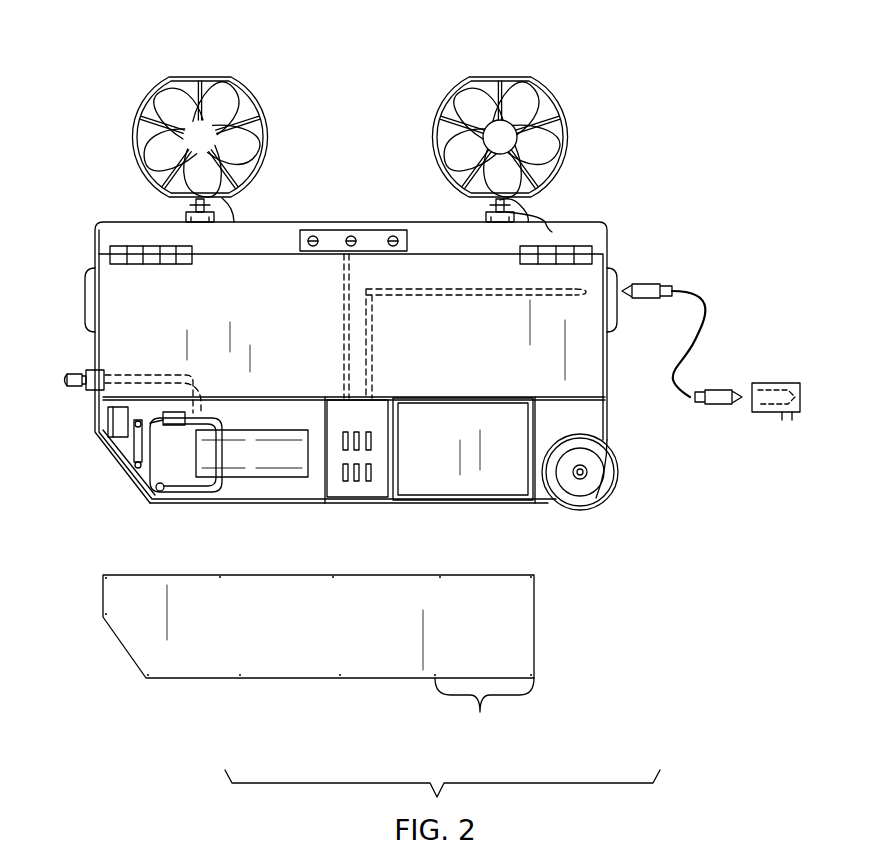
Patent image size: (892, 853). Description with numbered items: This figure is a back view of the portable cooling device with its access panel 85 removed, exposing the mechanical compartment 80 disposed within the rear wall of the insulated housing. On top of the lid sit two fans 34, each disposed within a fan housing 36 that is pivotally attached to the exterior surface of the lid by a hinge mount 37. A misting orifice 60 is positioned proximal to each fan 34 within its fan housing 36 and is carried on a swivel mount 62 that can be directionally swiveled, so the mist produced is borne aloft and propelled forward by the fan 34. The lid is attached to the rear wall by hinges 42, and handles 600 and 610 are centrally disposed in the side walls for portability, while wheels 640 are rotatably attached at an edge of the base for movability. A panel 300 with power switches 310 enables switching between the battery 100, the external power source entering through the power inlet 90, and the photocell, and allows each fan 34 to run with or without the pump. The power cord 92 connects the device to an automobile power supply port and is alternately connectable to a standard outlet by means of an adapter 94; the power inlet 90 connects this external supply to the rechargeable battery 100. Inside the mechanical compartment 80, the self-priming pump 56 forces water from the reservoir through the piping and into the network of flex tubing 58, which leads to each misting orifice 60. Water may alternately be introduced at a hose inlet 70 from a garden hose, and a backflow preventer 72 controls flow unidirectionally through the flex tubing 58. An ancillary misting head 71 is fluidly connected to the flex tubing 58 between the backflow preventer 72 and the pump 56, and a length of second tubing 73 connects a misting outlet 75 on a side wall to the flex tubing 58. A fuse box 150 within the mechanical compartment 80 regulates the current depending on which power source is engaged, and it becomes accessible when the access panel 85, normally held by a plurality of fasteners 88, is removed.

The fan 34 is at (500, 133).
The fan housing 36 is at (552, 108).
The hinge mount 37 is at (545, 200).
The misting orifice 60 is at (515, 196).
The swivel mount 62 is at (548, 224).
The hinge 42 is at (598, 252).
The handle 610 is at (617, 286).
The handle 600 is at (88, 272).
The power inlet 90 is at (672, 289).
The power cord 92 is at (706, 322).
The adapter 94 is at (785, 383).
The panel 300 is at (340, 238).
The power switches 310 is at (351, 236).
The second tubing 73 is at (135, 372).
The misting outlet 75 is at (95, 370).
The ancillary misting head 71 is at (75, 374).
The hose inlet 70 is at (108, 422).
The backflow preventer 72 is at (130, 432).
The flex tubing 58 is at (188, 425).
The mechanical compartment 80 is at (232, 492).
The self-priming pump 56 is at (280, 478).
The fuse box 150 is at (365, 497).
The battery 100 is at (475, 485).
The wheels 640 is at (616, 482).
The access panel 85 is at (517, 625).
The fasteners 88 is at (482, 712).